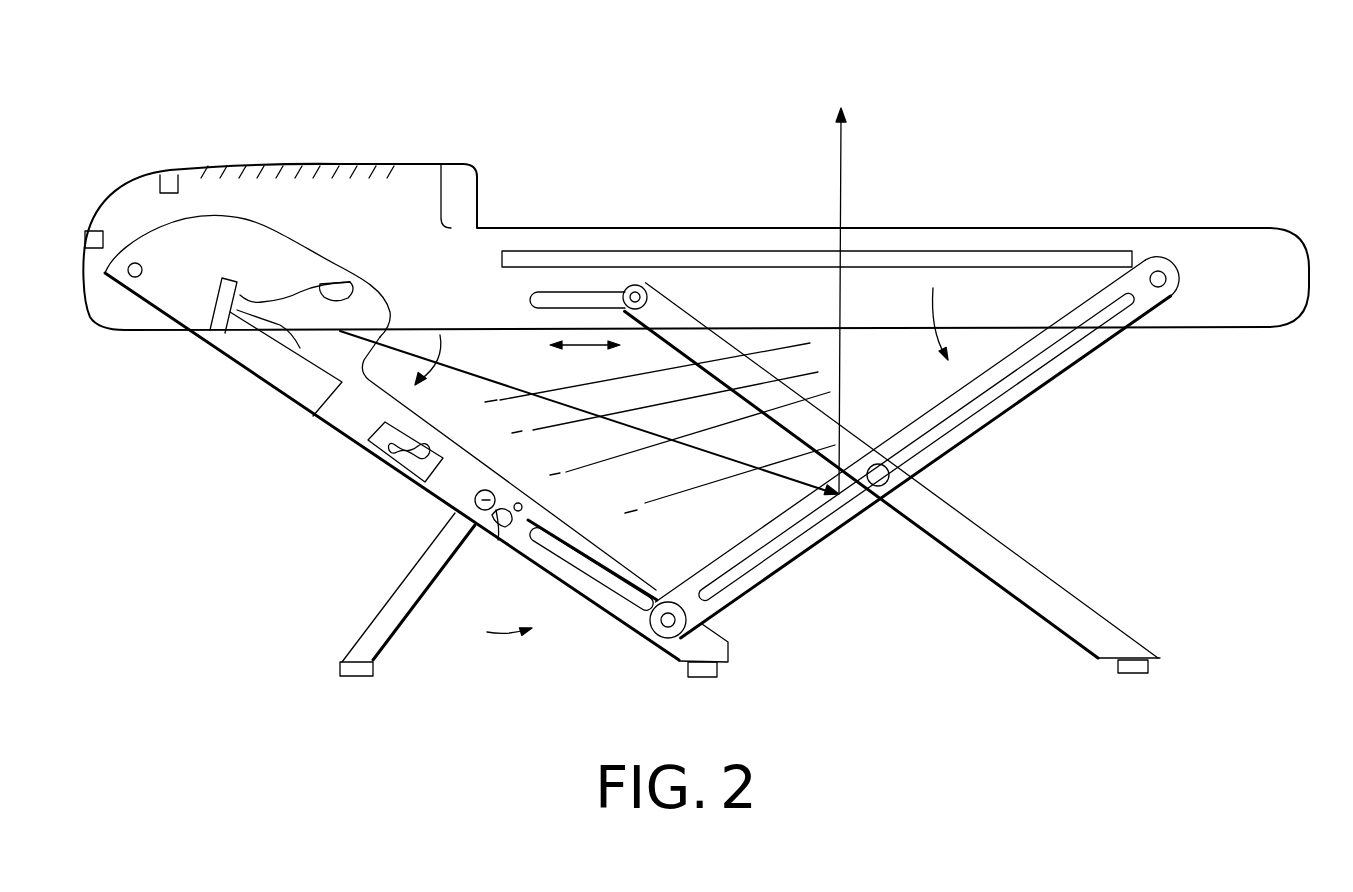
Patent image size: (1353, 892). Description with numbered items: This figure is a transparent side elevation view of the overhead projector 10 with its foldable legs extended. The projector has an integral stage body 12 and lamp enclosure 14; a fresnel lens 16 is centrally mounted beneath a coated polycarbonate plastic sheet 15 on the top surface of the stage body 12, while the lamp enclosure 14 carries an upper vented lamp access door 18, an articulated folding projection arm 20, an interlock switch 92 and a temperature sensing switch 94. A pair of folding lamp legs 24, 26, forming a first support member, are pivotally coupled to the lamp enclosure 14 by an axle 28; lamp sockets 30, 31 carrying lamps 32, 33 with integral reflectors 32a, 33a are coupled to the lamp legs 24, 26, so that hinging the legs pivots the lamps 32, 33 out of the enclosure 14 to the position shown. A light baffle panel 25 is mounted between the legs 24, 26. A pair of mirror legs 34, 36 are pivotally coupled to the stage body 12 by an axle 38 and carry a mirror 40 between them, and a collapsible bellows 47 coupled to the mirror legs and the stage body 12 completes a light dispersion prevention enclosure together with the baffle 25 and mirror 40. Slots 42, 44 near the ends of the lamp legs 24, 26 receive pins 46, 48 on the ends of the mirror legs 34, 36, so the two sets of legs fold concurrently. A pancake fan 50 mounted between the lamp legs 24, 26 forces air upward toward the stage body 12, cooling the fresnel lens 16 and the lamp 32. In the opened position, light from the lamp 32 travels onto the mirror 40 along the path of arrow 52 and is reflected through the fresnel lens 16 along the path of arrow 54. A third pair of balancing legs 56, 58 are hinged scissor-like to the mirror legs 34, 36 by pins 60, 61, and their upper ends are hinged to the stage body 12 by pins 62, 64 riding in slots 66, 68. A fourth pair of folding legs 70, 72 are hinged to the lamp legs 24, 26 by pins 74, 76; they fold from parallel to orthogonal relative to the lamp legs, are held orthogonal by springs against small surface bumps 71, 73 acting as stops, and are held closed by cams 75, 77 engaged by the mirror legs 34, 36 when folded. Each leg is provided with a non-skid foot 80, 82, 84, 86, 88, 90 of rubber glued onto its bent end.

The overhead projector 10 is at (1010, 125).
The stage body 12 is at (512, 227).
The lamp enclosure 14 is at (407, 164).
The coated polycarbonate plastic sheet 15 is at (1028, 227).
The fresnel lens 16 is at (912, 256).
The vented lamp access door 18 is at (255, 167).
The articulated folding projection arm 20 is at (458, 178).
The folding lamp leg 24 is at (592, 608).
The folding lamp leg 26 is at (625, 608).
The light baffle panel 25 is at (342, 438).
The axle 28 is at (128, 275).
The lamp socket 30 is at (247, 347).
The lamp socket 31 is at (218, 312).
The lamp 32 is at (247, 265).
The lamp 33 is at (260, 298).
The integral reflector 32a is at (392, 265).
The integral reflector 33a is at (340, 305).
The mirror leg 34 is at (917, 447).
The mirror leg 36 is at (1035, 383).
The axle 38 is at (1160, 271).
The mirror 40 is at (1068, 337).
The slot 42 is at (620, 569).
The slot 44 is at (608, 578).
The pin 46 is at (735, 624).
The pin 48 is at (676, 621).
The collapsible bellows 47 is at (668, 474).
The pancake fan 50 is at (392, 460).
The arrow 52 is at (474, 378).
The arrow 54 is at (717, 371).
The balancing leg 56 is at (893, 470).
The balancing leg 58 is at (1053, 590).
The pin 60 is at (952, 478).
The pin 61 is at (892, 468).
The pin 62 is at (684, 246).
The pin 64 is at (637, 292).
The slot 66 is at (592, 242).
The slot 68 is at (583, 296).
The folding leg 70 is at (411, 597).
The folding leg 72 is at (377, 647).
The surface bump 71 is at (580, 491).
The surface bump 73 is at (524, 505).
The pin 74 is at (416, 526).
The pin 76 is at (474, 500).
The cam 75 is at (497, 559).
The cam 77 is at (503, 524).
The non-skid foot 80 is at (326, 698).
The non-skid foot 82 is at (342, 677).
The non-skid foot 84 is at (746, 690).
The non-skid foot 86 is at (706, 676).
The non-skid foot 88 is at (1147, 694).
The non-skid foot 90 is at (1137, 672).
The interlock switch 92 is at (86, 238).
The temperature sensing switch 94 is at (168, 175).